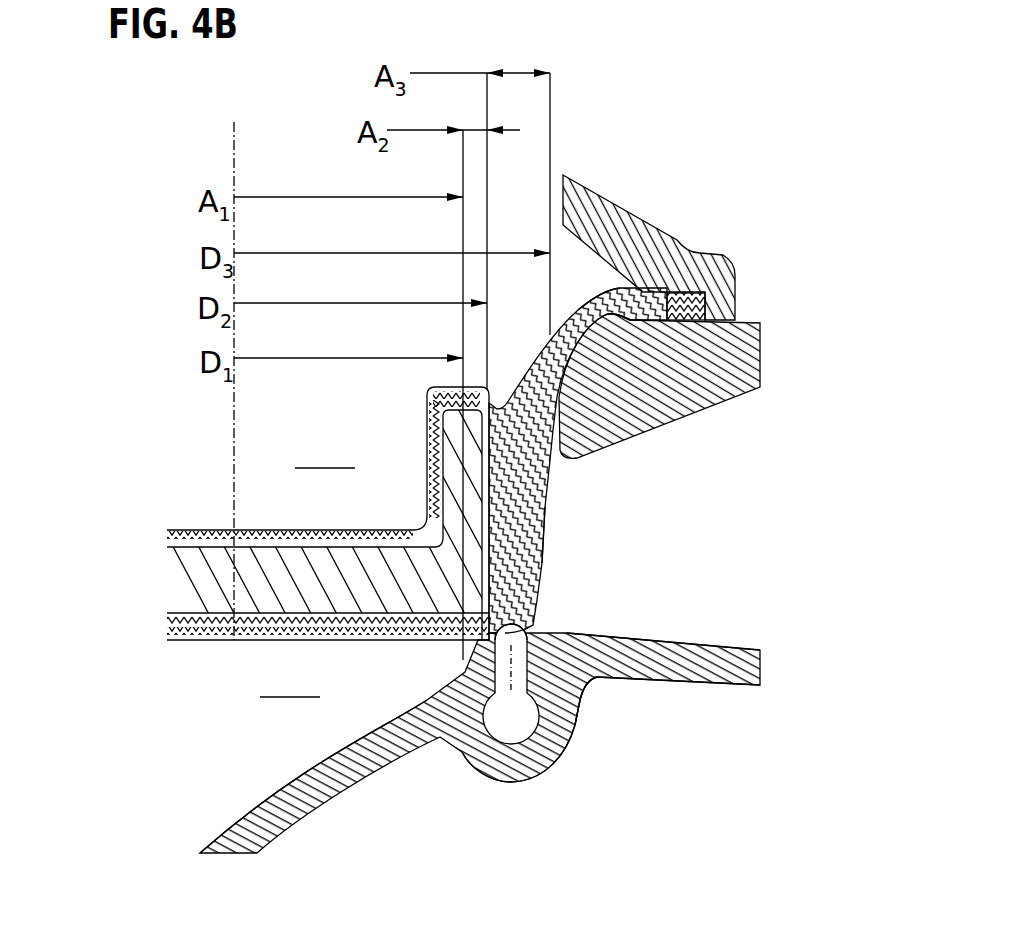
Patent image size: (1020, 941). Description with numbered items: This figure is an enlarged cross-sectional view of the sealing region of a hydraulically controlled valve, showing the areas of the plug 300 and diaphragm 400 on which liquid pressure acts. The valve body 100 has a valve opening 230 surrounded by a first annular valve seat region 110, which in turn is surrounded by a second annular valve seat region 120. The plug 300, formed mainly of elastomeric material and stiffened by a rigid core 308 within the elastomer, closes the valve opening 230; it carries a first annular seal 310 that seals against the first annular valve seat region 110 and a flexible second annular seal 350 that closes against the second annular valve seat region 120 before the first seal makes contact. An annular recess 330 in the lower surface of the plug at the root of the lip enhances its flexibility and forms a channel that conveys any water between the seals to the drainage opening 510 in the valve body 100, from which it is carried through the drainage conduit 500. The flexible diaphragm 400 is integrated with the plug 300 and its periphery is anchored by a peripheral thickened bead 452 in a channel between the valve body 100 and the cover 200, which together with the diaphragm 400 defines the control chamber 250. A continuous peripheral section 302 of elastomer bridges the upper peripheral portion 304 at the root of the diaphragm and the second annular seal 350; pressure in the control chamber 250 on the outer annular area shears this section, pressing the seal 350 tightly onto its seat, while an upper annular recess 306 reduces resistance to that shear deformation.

The valve body 100 is at (227, 823).
The first annular valve seat region 110 is at (543, 540).
The second annular valve seat region 120 is at (597, 677).
The cover 200 is at (637, 223).
The valve opening 230 is at (289, 678).
The control chamber 250 is at (324, 448).
The plug 300 is at (207, 530).
The peripheral section 302 is at (550, 507).
The upper peripheral portion 304 is at (675, 430).
The upper annular recess 306 is at (560, 367).
The rigid core 308 is at (207, 580).
The first annular seal 310 is at (543, 553).
The annular recess 330 is at (543, 633).
The second annular seal 350 is at (550, 633).
The flexible diaphragm 400 is at (593, 290).
The peripheral thickened bead 452 is at (727, 257).
The drainage conduit 500 is at (510, 733).
The drainage opening 510 is at (577, 710).